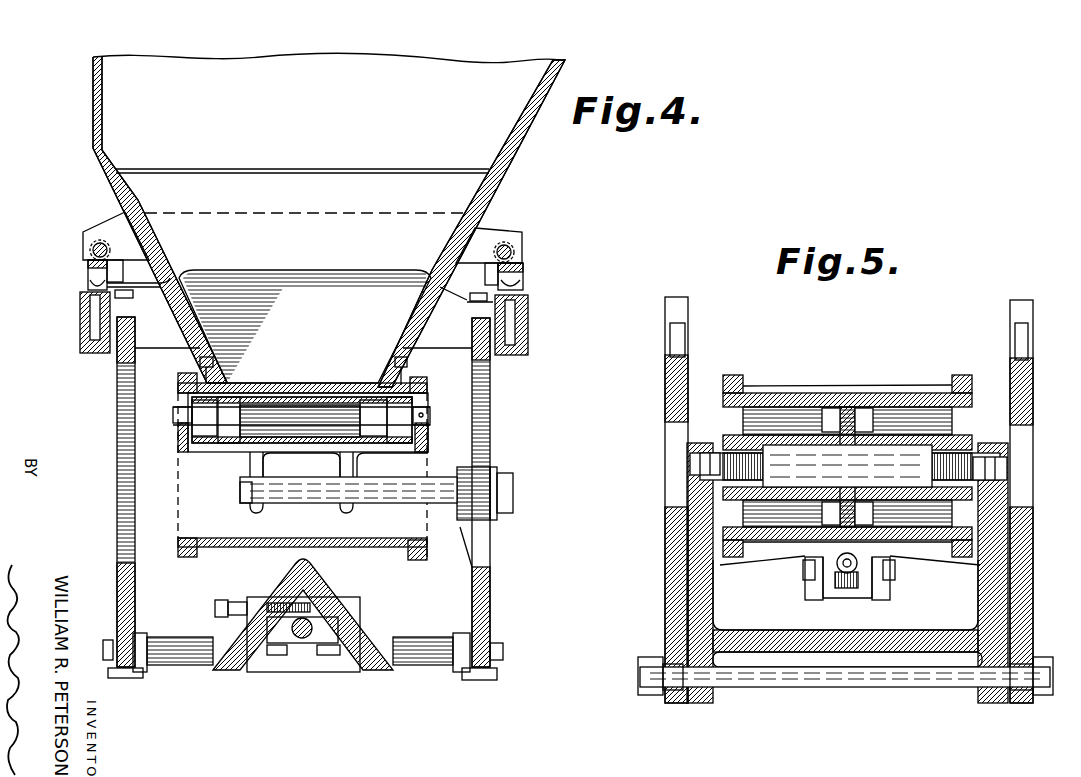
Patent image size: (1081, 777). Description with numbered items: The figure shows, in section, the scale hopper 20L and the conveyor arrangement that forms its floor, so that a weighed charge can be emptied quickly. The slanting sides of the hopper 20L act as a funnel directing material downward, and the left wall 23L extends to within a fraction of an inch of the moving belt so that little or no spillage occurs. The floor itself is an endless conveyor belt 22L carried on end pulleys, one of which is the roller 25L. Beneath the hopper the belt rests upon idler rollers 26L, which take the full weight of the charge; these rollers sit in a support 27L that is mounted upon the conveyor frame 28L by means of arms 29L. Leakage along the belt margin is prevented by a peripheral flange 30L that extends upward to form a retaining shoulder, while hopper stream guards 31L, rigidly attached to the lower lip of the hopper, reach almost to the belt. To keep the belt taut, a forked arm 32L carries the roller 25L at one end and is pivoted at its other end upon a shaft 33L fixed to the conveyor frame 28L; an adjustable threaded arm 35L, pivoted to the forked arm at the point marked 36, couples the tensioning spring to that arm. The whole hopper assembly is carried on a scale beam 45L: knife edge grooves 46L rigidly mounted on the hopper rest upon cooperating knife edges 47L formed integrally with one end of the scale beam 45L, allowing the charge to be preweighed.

In FIG. 4, the scale hopper 20L is at (326, 218).
In FIG. 4, the left wall 23L is at (118, 178).
In FIG. 4, the knife edge grooves 46L is at (84, 234).
In FIG. 4, the knife edges 47L is at (80, 267).
In FIG. 4, the scale beam 45L is at (80, 316).
In FIG. 4, the hopper stream guards 31L is at (200, 362).
In FIG. 4, the peripheral flange 30L is at (178, 385).
In FIG. 4, the conveyor belt 22L is at (427, 388).
In FIG. 4, the idler rollers 26L is at (421, 410).
In FIG. 4, the conveyor frame 28L is at (128, 403).
In FIG. 5, the conveyor frame 28L is at (665, 398).
In FIG. 4, the support 27L is at (200, 453).
In FIG. 4, the arms 29L is at (380, 480).
In FIG. 5, the end pulley 25L is at (970, 407).
In FIG. 5, the forked arm 32L is at (704, 598).
In FIG. 5, the nut 36 is at (894, 572).
In FIG. 5, the adjustable threaded arm 35L is at (848, 590).
In FIG. 5, the shaft 33L is at (846, 688).